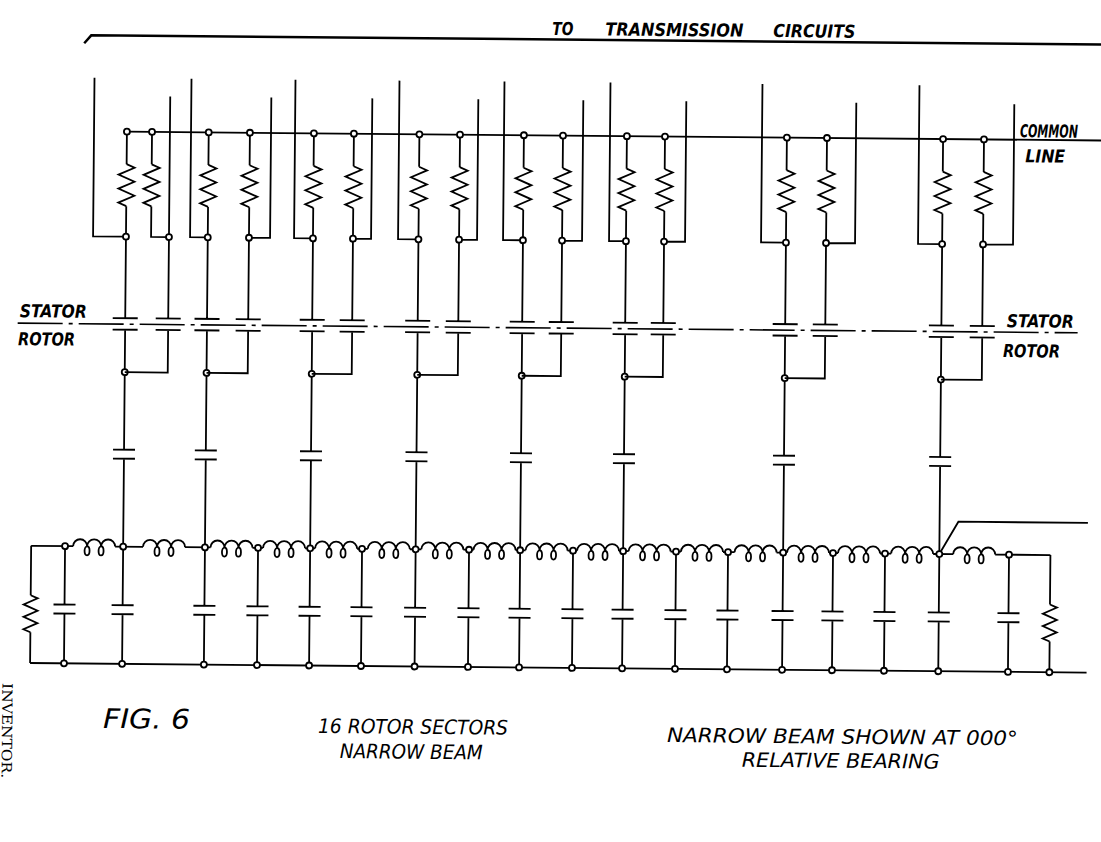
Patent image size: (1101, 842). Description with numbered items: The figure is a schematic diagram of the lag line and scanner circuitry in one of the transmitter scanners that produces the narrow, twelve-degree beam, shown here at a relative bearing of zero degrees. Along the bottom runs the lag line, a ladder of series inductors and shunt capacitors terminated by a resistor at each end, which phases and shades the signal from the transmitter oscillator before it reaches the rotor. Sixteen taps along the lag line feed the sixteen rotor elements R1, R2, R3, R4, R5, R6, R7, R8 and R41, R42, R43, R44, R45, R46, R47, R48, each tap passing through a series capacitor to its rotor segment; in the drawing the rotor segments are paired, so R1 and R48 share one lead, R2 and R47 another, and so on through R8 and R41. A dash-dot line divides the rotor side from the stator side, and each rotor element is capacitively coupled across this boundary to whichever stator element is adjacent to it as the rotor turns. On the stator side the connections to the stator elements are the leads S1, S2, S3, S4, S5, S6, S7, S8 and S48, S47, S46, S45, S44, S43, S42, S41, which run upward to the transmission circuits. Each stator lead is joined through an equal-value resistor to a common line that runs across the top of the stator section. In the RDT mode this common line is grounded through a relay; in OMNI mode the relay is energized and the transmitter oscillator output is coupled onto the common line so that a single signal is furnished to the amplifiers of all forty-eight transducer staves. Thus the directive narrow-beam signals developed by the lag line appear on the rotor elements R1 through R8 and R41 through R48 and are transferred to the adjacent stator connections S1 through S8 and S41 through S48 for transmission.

The stator element connection S1 is at (116, 195).
The stator element connection S2 is at (205, 196).
The stator element connection S3 is at (310, 196).
The stator element connection S4 is at (414, 197).
The stator element connection S5 is at (519, 198).
The stator element connection S6 is at (624, 198).
The stator element connection S7 is at (780, 201).
The stator element connection S8 is at (936, 203).
The stator element connection S41 is at (992, 215).
The stator element connection S42 is at (835, 213).
The stator element connection S43 is at (667, 210).
The stator element connection S44 is at (566, 210).
The stator element connection S45 is at (459, 209).
The stator element connection S46 is at (355, 207).
The stator element connection S47 is at (251, 206).
The stator element connection S48 is at (159, 206).
The rotor element R1 is at (134, 438).
The rotor element R2 is at (220, 438).
The rotor element R3 is at (325, 439).
The rotor element R4 is at (430, 440).
The rotor element R5 is at (537, 442).
The rotor element R6 is at (640, 443).
The rotor element R7 is at (803, 445).
The rotor element R8 is at (961, 446).
The rotor element R41 is at (989, 373).
The rotor element R42 is at (833, 372).
The rotor element R43 is at (670, 370).
The rotor element R44 is at (566, 369).
The rotor element R45 is at (461, 368).
The rotor element R46 is at (356, 367).
The rotor element R47 is at (250, 366).
The rotor element R48 is at (158, 366).